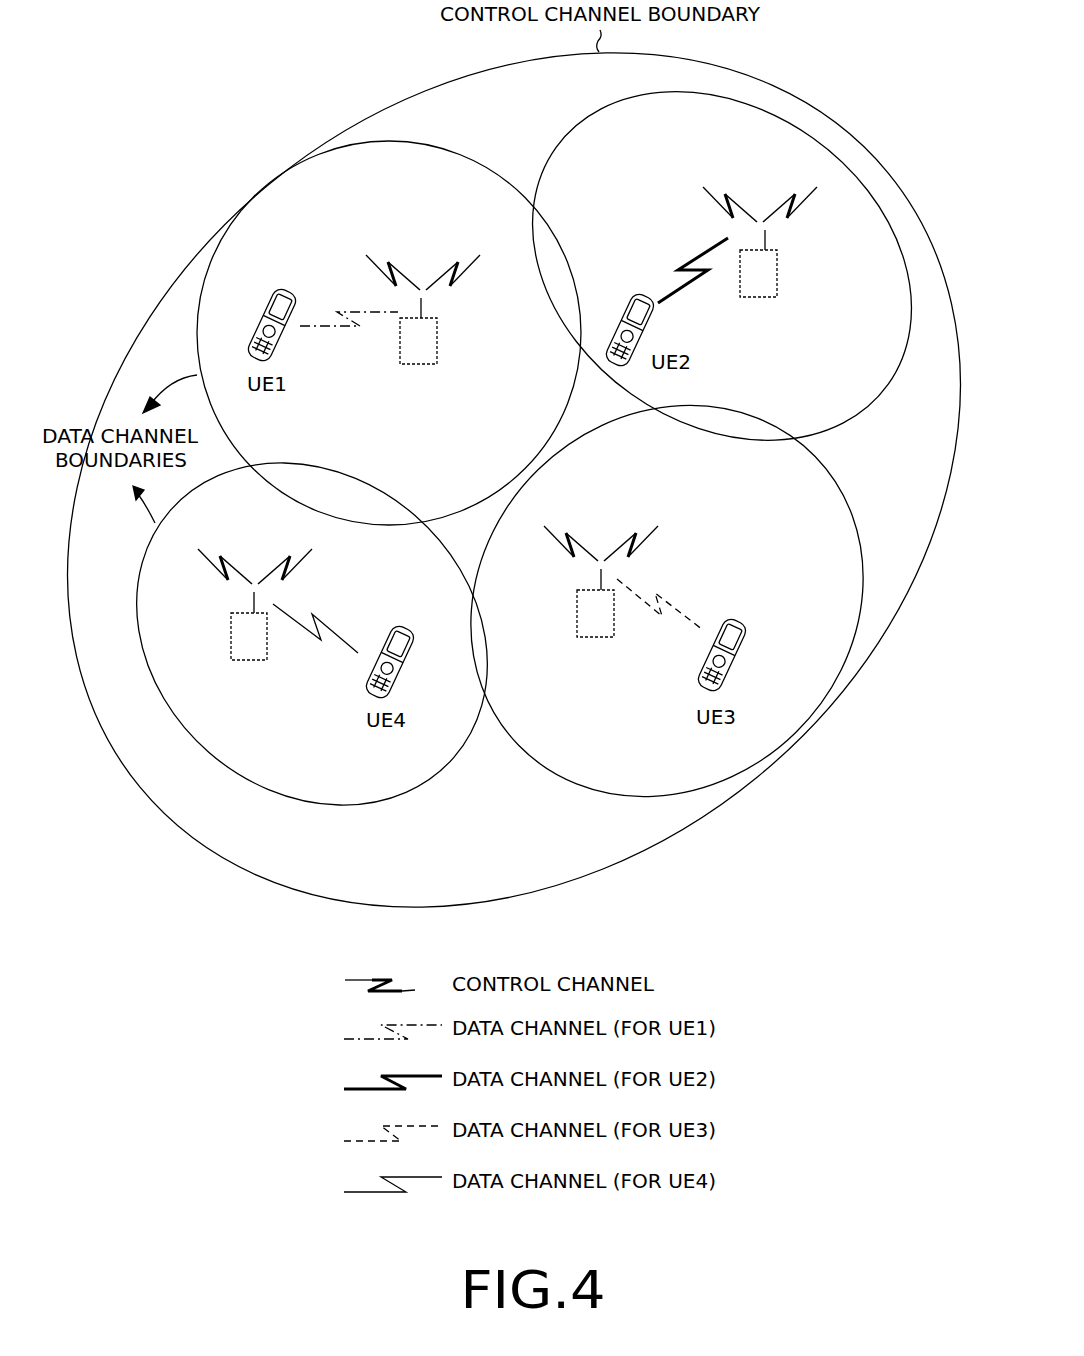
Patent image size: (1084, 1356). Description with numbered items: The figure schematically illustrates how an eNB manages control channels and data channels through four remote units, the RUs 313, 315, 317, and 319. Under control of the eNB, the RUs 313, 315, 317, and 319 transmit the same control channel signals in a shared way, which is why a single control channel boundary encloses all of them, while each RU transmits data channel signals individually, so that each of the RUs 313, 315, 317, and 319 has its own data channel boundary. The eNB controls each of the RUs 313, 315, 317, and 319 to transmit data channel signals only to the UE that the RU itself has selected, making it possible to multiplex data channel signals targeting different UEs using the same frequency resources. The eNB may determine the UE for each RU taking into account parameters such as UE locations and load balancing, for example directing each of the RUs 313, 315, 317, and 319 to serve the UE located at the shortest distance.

The RU 313 is at (231, 635).
The RU 315 is at (438, 337).
The RU 317 is at (781, 273).
The RU 319 is at (577, 611).